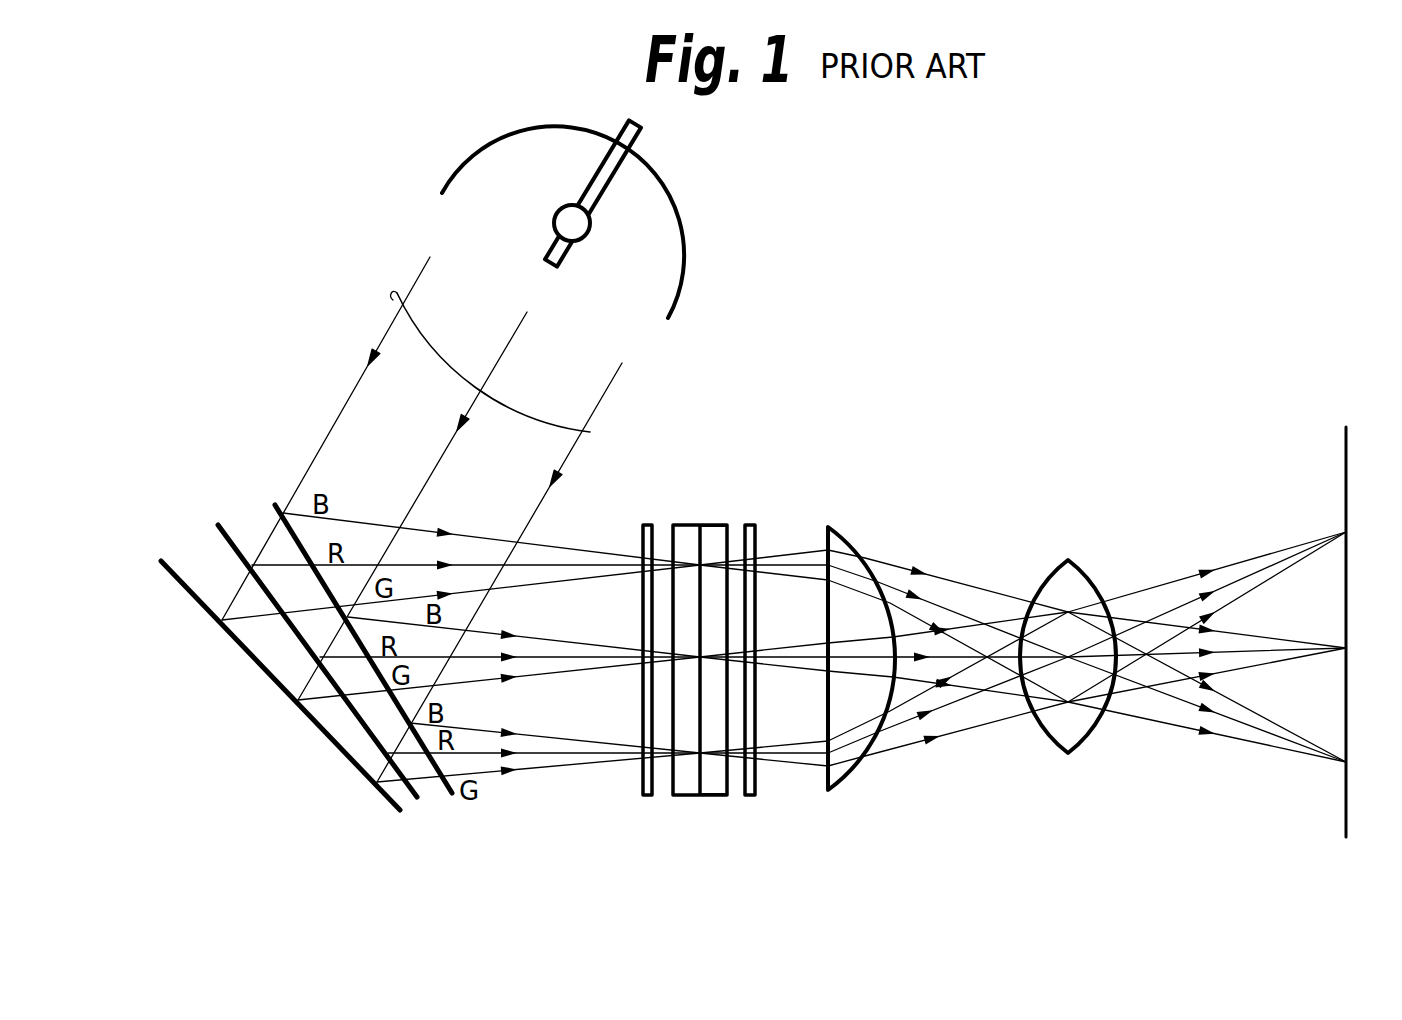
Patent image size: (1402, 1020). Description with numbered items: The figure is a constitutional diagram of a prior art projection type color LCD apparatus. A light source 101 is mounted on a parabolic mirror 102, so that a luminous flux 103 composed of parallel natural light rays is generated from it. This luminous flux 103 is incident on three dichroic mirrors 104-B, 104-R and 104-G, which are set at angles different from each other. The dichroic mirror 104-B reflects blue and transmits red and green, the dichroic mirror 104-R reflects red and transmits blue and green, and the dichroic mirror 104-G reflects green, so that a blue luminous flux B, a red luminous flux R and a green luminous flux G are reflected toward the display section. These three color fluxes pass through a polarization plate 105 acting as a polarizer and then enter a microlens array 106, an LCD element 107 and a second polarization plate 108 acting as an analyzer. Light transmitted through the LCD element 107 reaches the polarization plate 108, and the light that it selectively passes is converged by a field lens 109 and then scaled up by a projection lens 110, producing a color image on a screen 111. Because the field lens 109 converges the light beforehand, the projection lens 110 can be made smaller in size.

The light source 101 is at (592, 233).
The parabolic mirror 102 is at (682, 263).
The luminous flux 103 is at (590, 432).
The dichroic mirror 104-B is at (276, 507).
The dichroic mirror 104-R is at (223, 538).
The dichroic mirror 104-G is at (176, 581).
The polarization plate 105 is at (646, 796).
The microlens array 106 is at (683, 796).
The LCD element 107 is at (717, 526).
The polarization plate 108 is at (757, 796).
The field lens 109 is at (835, 790).
The projection lens 110 is at (1060, 562).
The screen 111 is at (1346, 460).